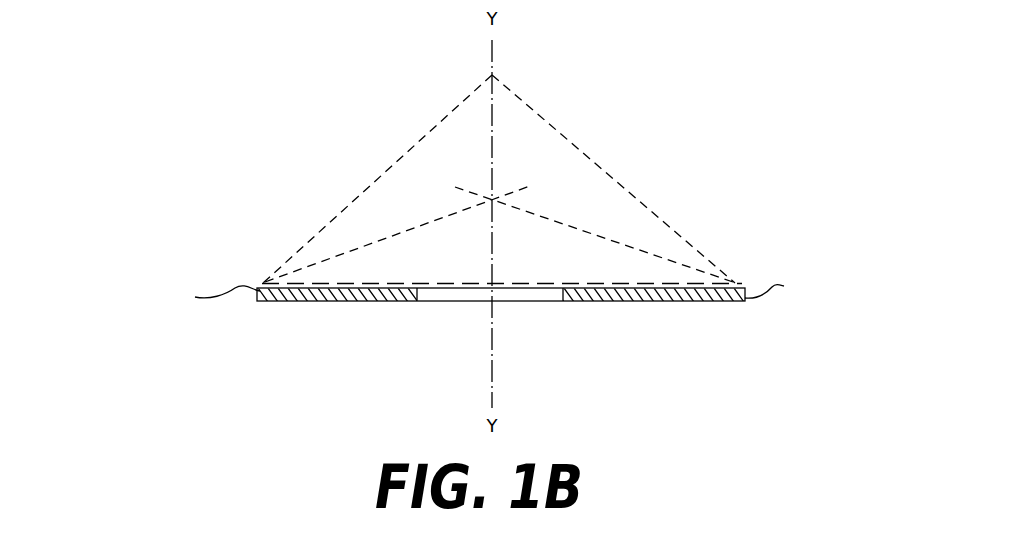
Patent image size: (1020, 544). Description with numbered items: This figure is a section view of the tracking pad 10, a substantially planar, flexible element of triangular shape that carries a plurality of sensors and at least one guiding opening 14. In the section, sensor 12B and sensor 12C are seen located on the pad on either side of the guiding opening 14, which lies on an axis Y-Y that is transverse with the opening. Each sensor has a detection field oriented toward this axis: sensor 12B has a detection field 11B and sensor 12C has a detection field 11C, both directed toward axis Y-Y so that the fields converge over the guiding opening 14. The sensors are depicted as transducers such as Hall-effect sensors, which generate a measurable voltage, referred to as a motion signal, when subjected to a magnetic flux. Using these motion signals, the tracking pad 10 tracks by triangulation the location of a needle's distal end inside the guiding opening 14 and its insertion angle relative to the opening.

The tracking pad 10 is at (707, 160).
The detection field 11B is at (597, 190).
The detection field 11C is at (418, 168).
The sensor 12B is at (707, 267).
The sensor 12C is at (290, 265).
The guiding opening 14 is at (502, 300).